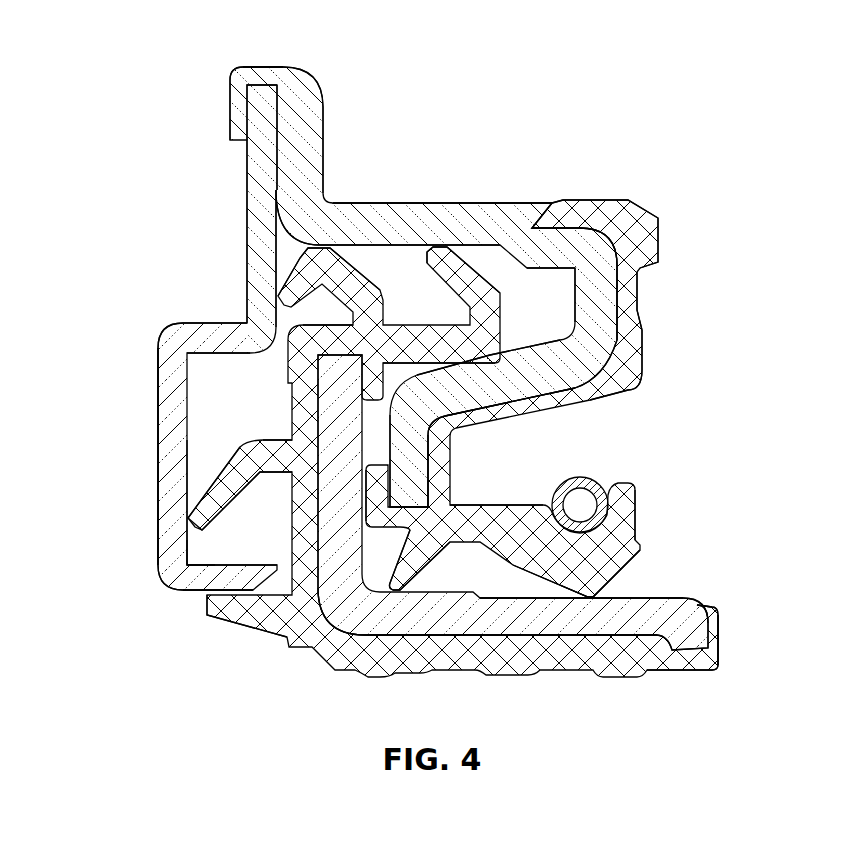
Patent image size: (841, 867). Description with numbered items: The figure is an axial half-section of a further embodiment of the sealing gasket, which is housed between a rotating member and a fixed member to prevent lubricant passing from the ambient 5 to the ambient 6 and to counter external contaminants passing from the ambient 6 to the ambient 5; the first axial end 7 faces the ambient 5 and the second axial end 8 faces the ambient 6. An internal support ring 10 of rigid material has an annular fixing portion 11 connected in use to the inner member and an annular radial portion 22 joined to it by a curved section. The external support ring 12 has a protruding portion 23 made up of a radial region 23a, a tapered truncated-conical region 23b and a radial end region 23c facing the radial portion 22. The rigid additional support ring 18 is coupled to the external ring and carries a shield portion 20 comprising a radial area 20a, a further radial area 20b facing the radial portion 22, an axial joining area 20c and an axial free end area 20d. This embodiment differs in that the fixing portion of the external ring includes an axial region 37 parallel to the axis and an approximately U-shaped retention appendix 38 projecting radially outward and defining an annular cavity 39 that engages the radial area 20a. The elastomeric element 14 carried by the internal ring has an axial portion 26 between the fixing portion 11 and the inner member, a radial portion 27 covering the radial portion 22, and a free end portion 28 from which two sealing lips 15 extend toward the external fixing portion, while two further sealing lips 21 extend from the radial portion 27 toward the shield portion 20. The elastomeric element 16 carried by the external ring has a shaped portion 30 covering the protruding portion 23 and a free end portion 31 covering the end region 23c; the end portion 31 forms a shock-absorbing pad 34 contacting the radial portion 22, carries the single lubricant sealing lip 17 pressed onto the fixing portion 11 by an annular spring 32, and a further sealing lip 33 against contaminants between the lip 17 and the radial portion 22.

The ambient 5 is at (694, 454).
The ambient 6 is at (112, 396).
The first axial end 7 is at (727, 628).
The second axial end 8 is at (153, 584).
The internal support ring 10 is at (617, 628).
The fixing portion 11 is at (571, 625).
The external support ring 12 is at (499, 198).
The elastomeric element 14 is at (672, 667).
The sealing lips 15 is at (328, 262).
The elastomeric element 16 is at (607, 206).
The sealing lip 17 is at (600, 594).
The additional support ring 18 is at (162, 331).
The shield portion 20 is at (170, 466).
The radial area 20a is at (260, 190).
The radial area 20b is at (167, 496).
The joining area 20c is at (218, 330).
The free end area 20d is at (182, 588).
The sealing lips 21 is at (200, 540).
The radial portion 22 is at (333, 537).
The protruding portion 23 is at (600, 277).
The radial region 23a is at (614, 300).
The truncated-conical region 23b is at (521, 370).
The radial end region 23c is at (410, 458).
The axial portion 26 is at (456, 650).
The radial portion 27 is at (297, 515).
The free end portion 28 is at (418, 345).
The shaped portion 30 is at (623, 368).
The free end portion 31 is at (508, 525).
The annular spring 32 is at (584, 477).
The sealing lip 33 is at (422, 582).
The shock-absorbing pad 34 is at (342, 622).
The axial region 37 is at (332, 228).
The retention appendix 38 is at (313, 132).
The annular cavity 39 is at (262, 76).